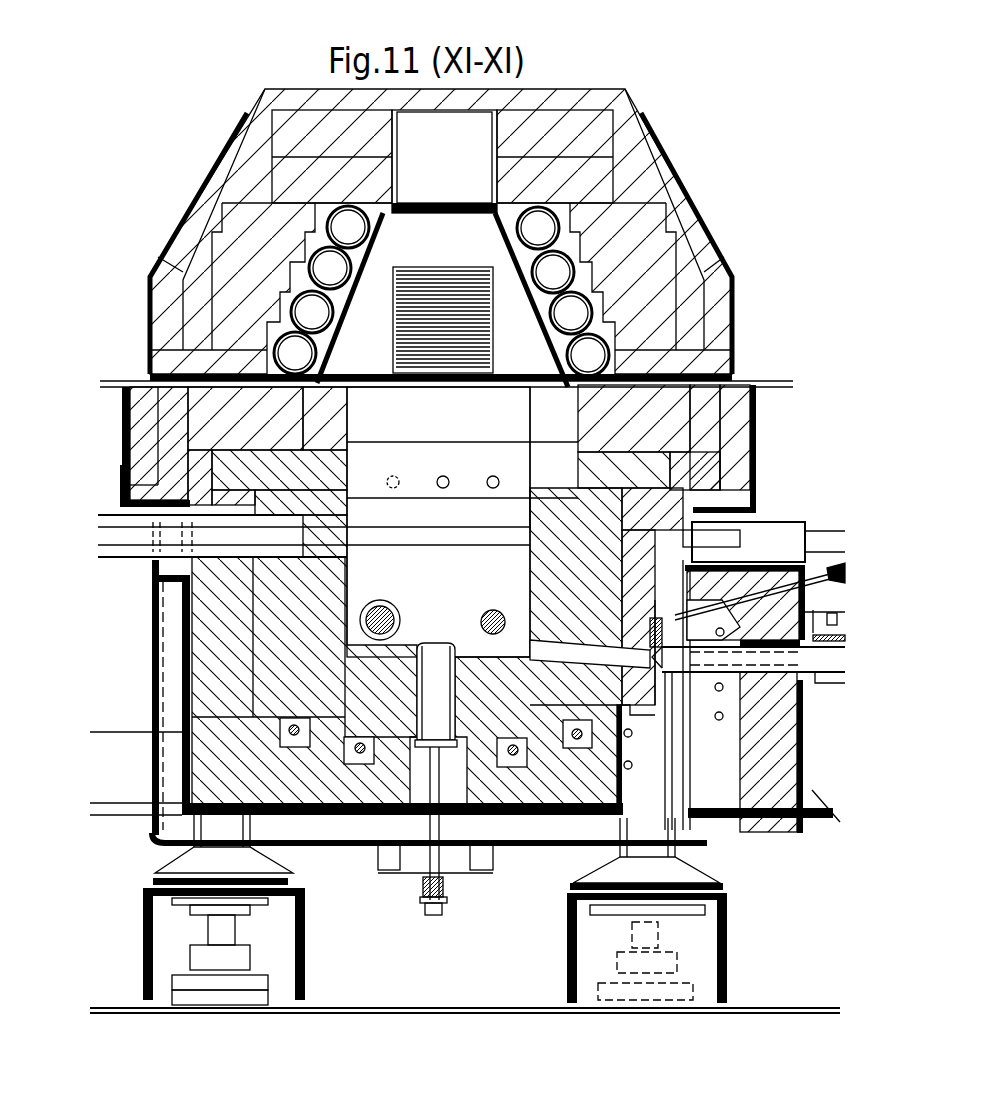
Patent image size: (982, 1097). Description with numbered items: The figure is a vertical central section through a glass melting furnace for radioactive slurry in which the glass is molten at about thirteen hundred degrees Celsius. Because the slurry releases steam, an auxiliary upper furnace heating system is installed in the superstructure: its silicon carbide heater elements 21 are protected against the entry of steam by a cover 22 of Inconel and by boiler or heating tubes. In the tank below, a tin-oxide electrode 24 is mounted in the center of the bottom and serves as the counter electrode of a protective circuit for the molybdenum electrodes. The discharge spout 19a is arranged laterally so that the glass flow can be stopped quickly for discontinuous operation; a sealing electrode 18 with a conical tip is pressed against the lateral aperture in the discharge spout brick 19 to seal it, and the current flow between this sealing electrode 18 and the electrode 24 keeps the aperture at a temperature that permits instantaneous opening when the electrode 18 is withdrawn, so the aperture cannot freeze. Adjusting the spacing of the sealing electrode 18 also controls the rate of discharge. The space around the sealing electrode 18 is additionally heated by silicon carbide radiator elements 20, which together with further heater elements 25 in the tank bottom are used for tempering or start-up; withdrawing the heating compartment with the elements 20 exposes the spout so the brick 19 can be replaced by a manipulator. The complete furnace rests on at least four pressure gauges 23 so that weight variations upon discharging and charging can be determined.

The sealing electrode 18 is at (677, 683).
The discharge spout brick 19 is at (653, 620).
The discharge spout 19a is at (633, 655).
The silicon carbide radiator elements 20 is at (715, 713).
The silicon carbide heater elements 21 is at (580, 356).
The cover 22 is at (531, 303).
The pressure gauges 23 is at (672, 963).
The tin-oxide electrode 24 is at (435, 658).
The heater elements 25 is at (343, 750).